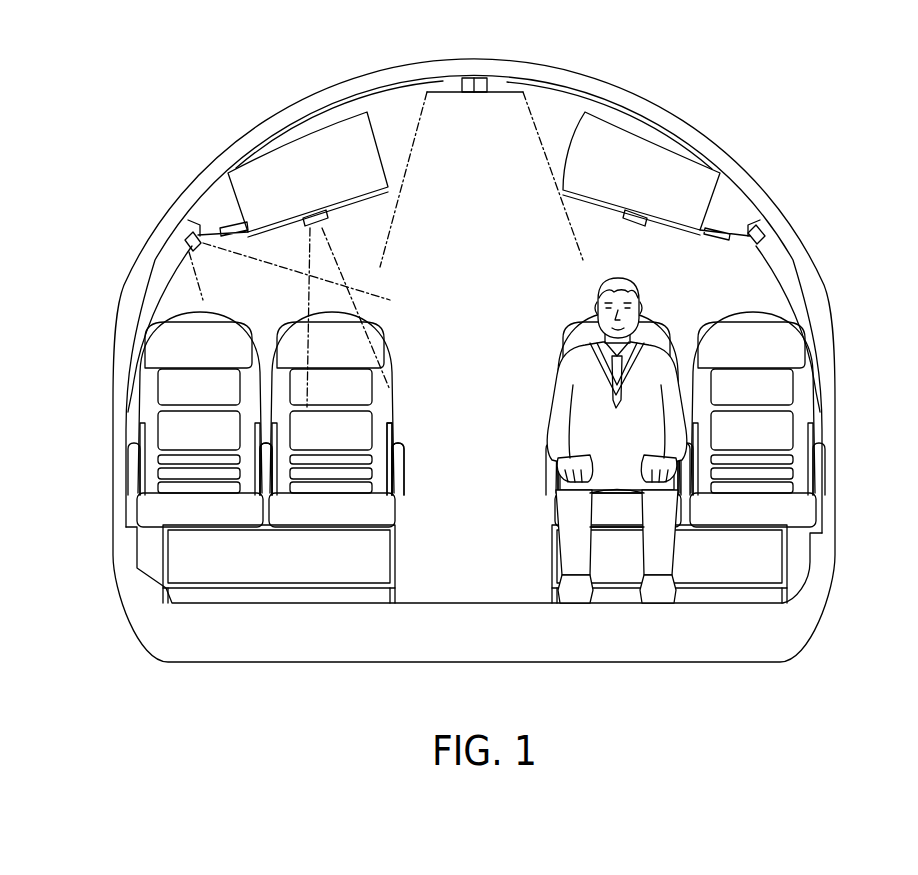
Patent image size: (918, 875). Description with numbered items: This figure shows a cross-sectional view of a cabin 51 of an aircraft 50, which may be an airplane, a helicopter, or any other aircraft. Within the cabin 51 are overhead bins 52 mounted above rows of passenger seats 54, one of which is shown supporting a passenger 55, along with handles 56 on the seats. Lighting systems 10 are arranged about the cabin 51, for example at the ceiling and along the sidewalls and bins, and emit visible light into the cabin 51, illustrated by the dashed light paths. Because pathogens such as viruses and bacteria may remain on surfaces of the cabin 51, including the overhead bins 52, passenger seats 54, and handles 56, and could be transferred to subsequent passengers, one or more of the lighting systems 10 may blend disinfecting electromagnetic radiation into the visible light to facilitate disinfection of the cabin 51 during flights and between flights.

The aircraft 50 is at (127, 74).
The lighting system 10 is at (462, 80).
The overhead bin 52 is at (264, 194).
The passenger seat 54 is at (360, 393).
The passenger 55 is at (695, 289).
The handle 56 is at (408, 457).
The cabin 51 is at (498, 509).